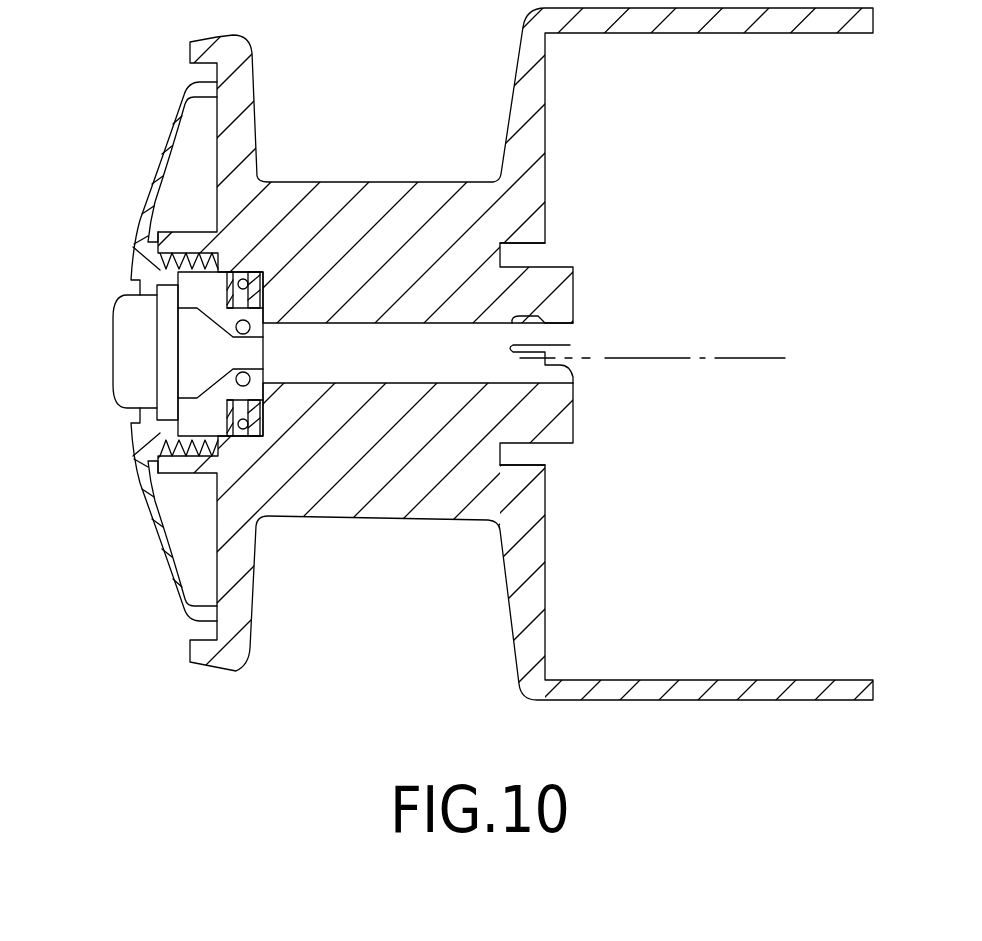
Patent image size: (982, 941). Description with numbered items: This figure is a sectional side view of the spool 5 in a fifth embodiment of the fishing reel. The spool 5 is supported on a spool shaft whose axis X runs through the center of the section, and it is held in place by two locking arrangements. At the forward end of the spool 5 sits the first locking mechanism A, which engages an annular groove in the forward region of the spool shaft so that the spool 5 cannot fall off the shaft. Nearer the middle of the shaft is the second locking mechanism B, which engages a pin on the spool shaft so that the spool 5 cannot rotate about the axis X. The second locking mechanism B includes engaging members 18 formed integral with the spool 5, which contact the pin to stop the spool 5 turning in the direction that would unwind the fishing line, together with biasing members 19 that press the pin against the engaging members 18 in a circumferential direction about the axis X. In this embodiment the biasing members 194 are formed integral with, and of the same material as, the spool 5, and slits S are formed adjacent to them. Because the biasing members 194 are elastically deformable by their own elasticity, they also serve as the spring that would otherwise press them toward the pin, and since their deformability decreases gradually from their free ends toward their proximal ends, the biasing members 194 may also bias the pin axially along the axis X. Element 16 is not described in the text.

The spool 5 is at (398, 198).
The lens 16 is at (127, 383).
The engaging members 18 is at (558, 378).
The biasing members 19 is at (560, 336).
The biasing members 194 is at (619, 312).
The first locking mechanism A is at (84, 279).
The second locking mechanism B is at (711, 260).
The slits S is at (545, 316).
The axis X is at (671, 359).